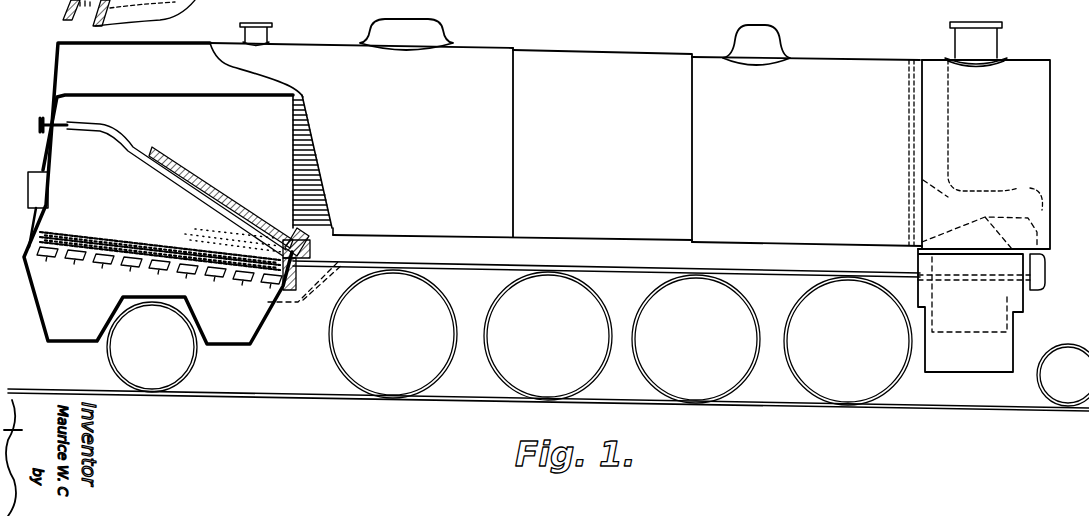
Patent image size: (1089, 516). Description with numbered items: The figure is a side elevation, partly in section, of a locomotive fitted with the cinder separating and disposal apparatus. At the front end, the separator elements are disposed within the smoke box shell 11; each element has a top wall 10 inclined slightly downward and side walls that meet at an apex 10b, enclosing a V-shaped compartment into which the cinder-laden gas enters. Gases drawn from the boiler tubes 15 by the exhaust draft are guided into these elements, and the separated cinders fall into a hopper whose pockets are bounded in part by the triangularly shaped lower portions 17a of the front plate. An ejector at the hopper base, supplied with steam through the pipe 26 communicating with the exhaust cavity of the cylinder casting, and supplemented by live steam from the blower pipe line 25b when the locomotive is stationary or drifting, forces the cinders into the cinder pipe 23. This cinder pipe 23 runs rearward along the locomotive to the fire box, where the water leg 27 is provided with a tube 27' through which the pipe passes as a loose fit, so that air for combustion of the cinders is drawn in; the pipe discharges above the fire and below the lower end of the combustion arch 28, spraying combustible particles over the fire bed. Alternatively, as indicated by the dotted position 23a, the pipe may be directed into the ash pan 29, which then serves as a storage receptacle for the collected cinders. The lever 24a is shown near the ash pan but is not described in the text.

The top wall 10 is at (973, 154).
The apex 10b is at (1013, 188).
The smoke box shell 11 is at (1033, 70).
The boiler tubes 15 is at (322, 208).
The triangularly shaped lower portions of front plate 17a is at (1028, 261).
The cinder pipe 23 is at (835, 264).
The dotted position of cinder pipe 23a is at (303, 306).
The lever 24a is at (1043, 282).
The blower pipe line 25b is at (929, 182).
The pipe 26 is at (1028, 287).
The water leg 27 is at (330, 232).
The tube 27' is at (320, 262).
The combustion arch 28 is at (222, 196).
The ash pan 29 is at (236, 338).